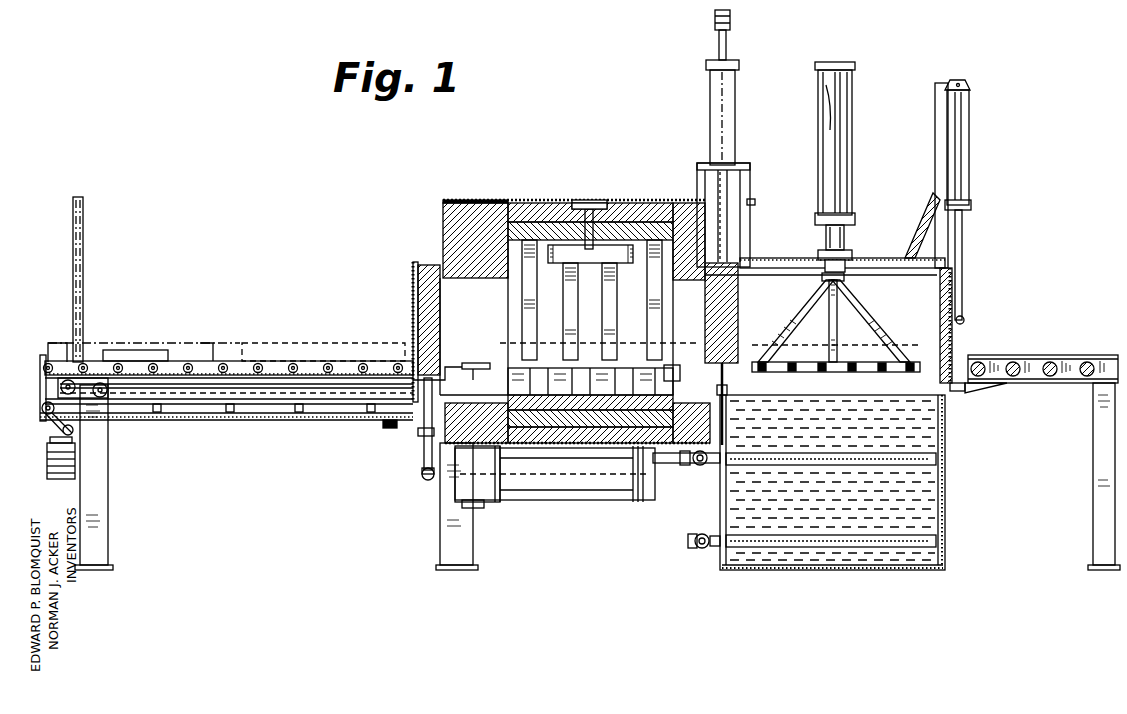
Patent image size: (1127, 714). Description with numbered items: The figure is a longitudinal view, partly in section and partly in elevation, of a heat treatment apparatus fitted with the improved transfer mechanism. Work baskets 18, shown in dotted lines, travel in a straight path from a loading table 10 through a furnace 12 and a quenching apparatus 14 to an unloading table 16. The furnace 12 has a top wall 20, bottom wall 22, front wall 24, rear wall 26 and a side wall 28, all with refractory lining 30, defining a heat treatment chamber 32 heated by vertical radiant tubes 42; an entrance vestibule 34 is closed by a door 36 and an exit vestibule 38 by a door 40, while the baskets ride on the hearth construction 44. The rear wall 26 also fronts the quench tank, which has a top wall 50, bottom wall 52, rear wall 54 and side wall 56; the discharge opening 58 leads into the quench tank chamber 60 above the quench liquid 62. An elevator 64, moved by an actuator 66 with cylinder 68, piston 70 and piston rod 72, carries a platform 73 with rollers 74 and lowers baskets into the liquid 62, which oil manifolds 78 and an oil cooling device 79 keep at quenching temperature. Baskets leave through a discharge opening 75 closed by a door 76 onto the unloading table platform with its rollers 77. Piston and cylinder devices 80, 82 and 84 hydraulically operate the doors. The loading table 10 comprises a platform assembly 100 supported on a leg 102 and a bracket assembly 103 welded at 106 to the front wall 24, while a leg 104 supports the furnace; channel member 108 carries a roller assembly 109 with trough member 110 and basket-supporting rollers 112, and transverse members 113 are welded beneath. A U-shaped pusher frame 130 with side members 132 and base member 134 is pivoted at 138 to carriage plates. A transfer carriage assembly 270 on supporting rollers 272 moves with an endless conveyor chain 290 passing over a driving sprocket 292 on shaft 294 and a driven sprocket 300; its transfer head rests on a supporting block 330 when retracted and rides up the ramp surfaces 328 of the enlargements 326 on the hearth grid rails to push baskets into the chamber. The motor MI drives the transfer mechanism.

The loading table 10 is at (248, 330).
The heat treatment chamber or furnace 12 is at (535, 185).
The quenching apparatus 14 is at (790, 195).
The unloading table 16 is at (1028, 335).
The work baskets 18 is at (138, 343).
The top wall 20 is at (612, 200).
The bottom wall 22 is at (692, 466).
The front wall 24 is at (443, 233).
The rear wall 26 is at (726, 395).
The side wall 28 is at (520, 215).
The refractory lining 30 is at (682, 210).
The heat treatment chamber 32 is at (590, 273).
The entrance vestibule 34 is at (463, 330).
The entrance vestibule door 36 is at (413, 300).
The exit vestibule 38 is at (603, 317).
The exit vestibule door 40 is at (738, 318).
The radiant tubes 42 is at (565, 305).
The hearth construction 44 is at (672, 376).
The top wall 50 is at (860, 260).
The bottom wall 52 is at (855, 571).
The rear wall 54 is at (945, 468).
The side wall 56 is at (952, 270).
The discharge opening 58 is at (728, 362).
The quench tank chamber 60 is at (869, 294).
The quench liquid 62 is at (928, 425).
The elevator 64 is at (872, 312).
The actuator 66 is at (852, 140).
The cylinder 68 is at (843, 112).
The piston 70 is at (826, 92).
The piston rod 72 is at (848, 233).
The platform 73 is at (850, 362).
The rollers 74 is at (816, 362).
The discharge opening 75 is at (952, 370).
The door 76 is at (962, 324).
The rollers 77 is at (1066, 365).
The oil manifolds 78 is at (740, 465).
The oil cooling device 79 is at (532, 493).
The piston and cylinder device 80 is at (420, 466).
The piston and cylinder device 82 is at (737, 118).
The piston and cylinder device 84 is at (970, 135).
The platform assembly 100 is at (258, 362).
The leg 102 is at (110, 520).
The bracket assembly 103 is at (416, 432).
The leg 104 is at (440, 548).
The weld 106 is at (418, 452).
The channel member 108 is at (268, 389).
The roller assembly 109 is at (278, 365).
The trough member 110 is at (316, 394).
The basket-supporting rollers 112 is at (313, 383).
The transverse members 113 is at (228, 413).
The pusher frame 130 is at (106, 340).
The side members 132 is at (178, 347).
The base member 134 is at (82, 198).
The pivot 138 is at (66, 343).
The transfer carriage assembly 270 is at (40, 376).
The supporting rollers 272 is at (104, 398).
The endless conveyor chain 290 is at (240, 421).
The driving sprocket 292 is at (58, 387).
The shaft 294 is at (42, 406).
The driven sprocket 300 is at (383, 425).
The enlargements 326 is at (498, 362).
The ramp surface 328 is at (510, 380).
The supporting block 330 is at (462, 504).
The motor MI is at (52, 443).